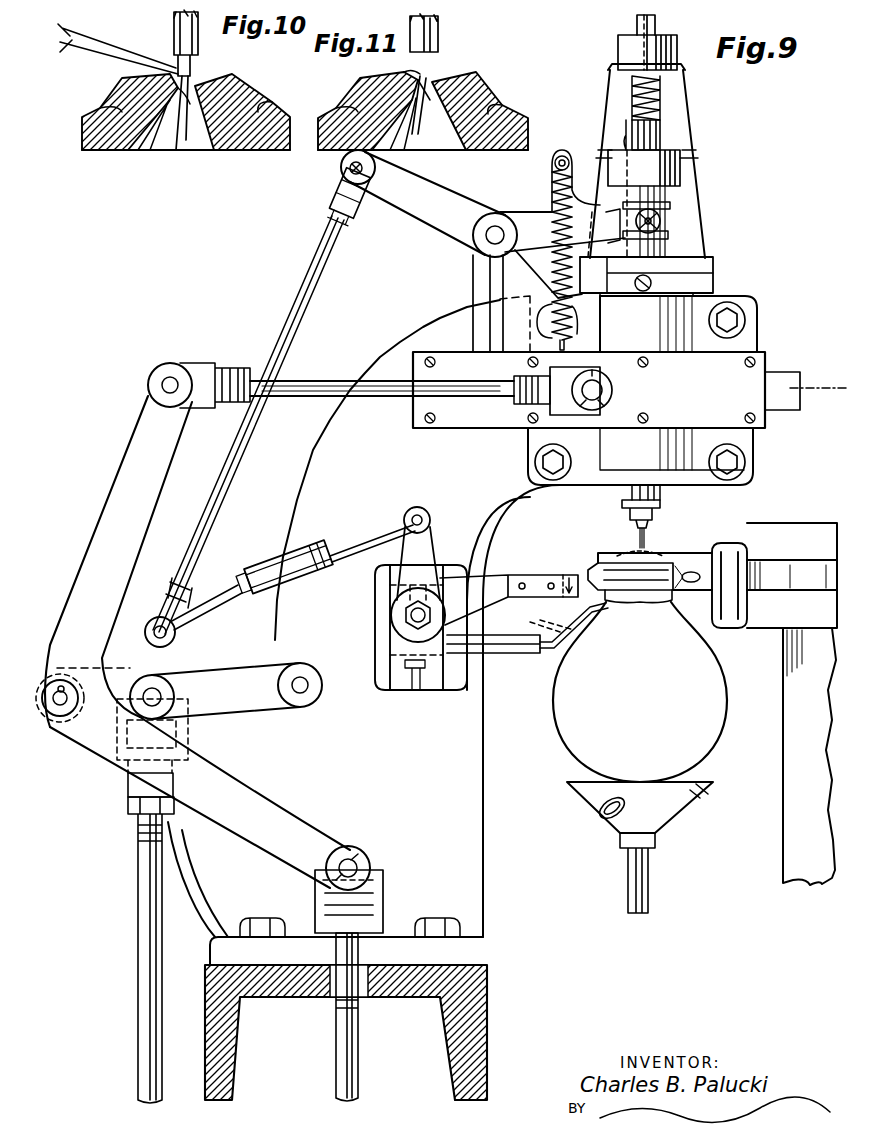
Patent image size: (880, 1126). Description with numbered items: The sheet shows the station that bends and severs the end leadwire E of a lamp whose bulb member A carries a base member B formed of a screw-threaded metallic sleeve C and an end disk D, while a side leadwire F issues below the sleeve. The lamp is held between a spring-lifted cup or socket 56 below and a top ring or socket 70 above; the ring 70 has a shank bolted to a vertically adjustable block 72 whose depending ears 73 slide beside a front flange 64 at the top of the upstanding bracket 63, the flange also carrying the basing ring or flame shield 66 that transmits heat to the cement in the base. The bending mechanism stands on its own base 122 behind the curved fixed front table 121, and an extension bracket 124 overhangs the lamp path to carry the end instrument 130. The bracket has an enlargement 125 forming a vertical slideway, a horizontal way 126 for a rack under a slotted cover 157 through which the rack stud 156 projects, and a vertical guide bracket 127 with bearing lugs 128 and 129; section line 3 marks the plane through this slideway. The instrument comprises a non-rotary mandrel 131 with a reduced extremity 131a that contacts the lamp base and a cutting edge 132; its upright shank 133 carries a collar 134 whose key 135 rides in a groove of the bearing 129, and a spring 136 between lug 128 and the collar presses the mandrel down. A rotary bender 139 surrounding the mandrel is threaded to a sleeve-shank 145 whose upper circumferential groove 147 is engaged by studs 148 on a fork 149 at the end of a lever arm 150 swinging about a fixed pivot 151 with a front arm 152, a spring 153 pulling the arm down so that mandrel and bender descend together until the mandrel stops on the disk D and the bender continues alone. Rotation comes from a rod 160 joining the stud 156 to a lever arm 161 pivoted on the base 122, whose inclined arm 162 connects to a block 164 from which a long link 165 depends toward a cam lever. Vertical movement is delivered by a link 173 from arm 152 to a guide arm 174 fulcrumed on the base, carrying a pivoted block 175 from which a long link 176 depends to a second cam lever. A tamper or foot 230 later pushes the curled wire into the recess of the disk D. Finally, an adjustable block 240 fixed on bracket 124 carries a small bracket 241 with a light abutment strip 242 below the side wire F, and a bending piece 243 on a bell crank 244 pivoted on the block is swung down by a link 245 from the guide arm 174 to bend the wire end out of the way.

In FIG. 9, the section line 3- 3 is at (829, 376).
In FIG. 9, the cup, ring or socket 56 is at (640, 847).
In FIG. 9, the upstanding bracket 63 is at (809, 756).
In FIG. 9, the front flange 64 is at (810, 610).
In FIG. 9, the ring member (basing ring or flame shield) 66 is at (708, 592).
In FIG. 9, the top ring or socket 70 is at (694, 560).
In FIG. 9, the vertically adjustable block 72 is at (792, 575).
In FIG. 9, the depending ears 73 is at (729, 585).
In FIG. 9, the curved fixed front table 121 is at (480, 1022).
In FIG. 9, the base 122 is at (325, 893).
In FIG. 9, the extension bracket 124 is at (758, 312).
In FIG. 9, the enlargement 125 is at (627, 320).
In FIG. 9, the horizontal way 126 is at (766, 428).
In FIG. 9, the vertical guide bracket 127 is at (680, 128).
In FIG. 9, the bearing lug 128 is at (618, 52).
In FIG. 9, the bearing lug 129 is at (682, 176).
In FIG. 9, the top or end instrument 130 is at (610, 514).
In FIG. 10, the non-rotary mandrel 131 is at (174, 28).
In FIG. 9, the non-rotary mandrel 131 is at (650, 516).
In FIG. 10, the reduced extremity 131a is at (194, 80).
In FIG. 10, the cutting edge 132 is at (172, 66).
In FIG. 9, the shank 133 is at (636, 24).
In FIG. 9, the collar or block 134 is at (662, 134).
In FIG. 9, the projection or key 135 is at (644, 134).
In FIG. 9, the spring 136 is at (661, 100).
In FIG. 9, the rotary member (rotary bender) 139 is at (652, 504).
In FIG. 9, the sleeve-shank 145 is at (668, 268).
In FIG. 9, the circumferential groove 147 is at (668, 226).
In FIG. 9, the studs 148 is at (660, 216).
In FIG. 9, the fork 149 is at (610, 244).
In FIG. 9, the lever arm 150 is at (540, 200).
In FIG. 9, the fixed pivot 151 is at (490, 240).
In FIG. 9, the front arm 152 is at (440, 190).
In FIG. 9, the spring 153 is at (554, 180).
In FIG. 9, the stud 156 is at (605, 390).
In FIG. 9, the slotted cover 157 is at (589, 390).
In FIG. 9, the rod 160 is at (340, 382).
In FIG. 9, the lever arm 161 is at (138, 426).
In FIG. 9, the inclined arm 162 is at (193, 781).
In FIG. 9, the block 164 is at (385, 905).
In FIG. 9, the long link 165 is at (360, 1052).
In FIG. 9, the link 173 is at (324, 256).
In FIG. 9, the guide arm 174 is at (226, 691).
In FIG. 9, the block 175 is at (188, 727).
In FIG. 9, the long link 176 is at (138, 898).
In FIG. 11, the tamper or foot 230 is at (440, 38).
In FIG. 9, the adjustable block 240 is at (410, 668).
In FIG. 9, the small bracket 241 is at (516, 655).
In FIG. 9, the light abutment strip 242 is at (574, 632).
In FIG. 9, the bending piece 243 is at (560, 572).
In FIG. 9, the bell crank 244 is at (428, 530).
In FIG. 9, the link 245 is at (232, 598).
In FIG. 9, the glass container or bulb member A is at (640, 666).
In FIG. 9, the base member B is at (646, 600).
In FIG. 10, the screw threaded metallic sleeve C is at (90, 112).
In FIG. 10, the metallic button or disk D is at (226, 74).
In FIG. 11, the metallic button or disk D is at (374, 72).
In FIG. 9, the metallic button or disk D is at (650, 548).
In FIG. 10, the end lead wire E is at (181, 156).
In FIG. 11, the end lead wire E is at (440, 72).
In FIG. 9, the end lead wire E is at (638, 548).
In FIG. 9, the side leadwire F is at (574, 602).